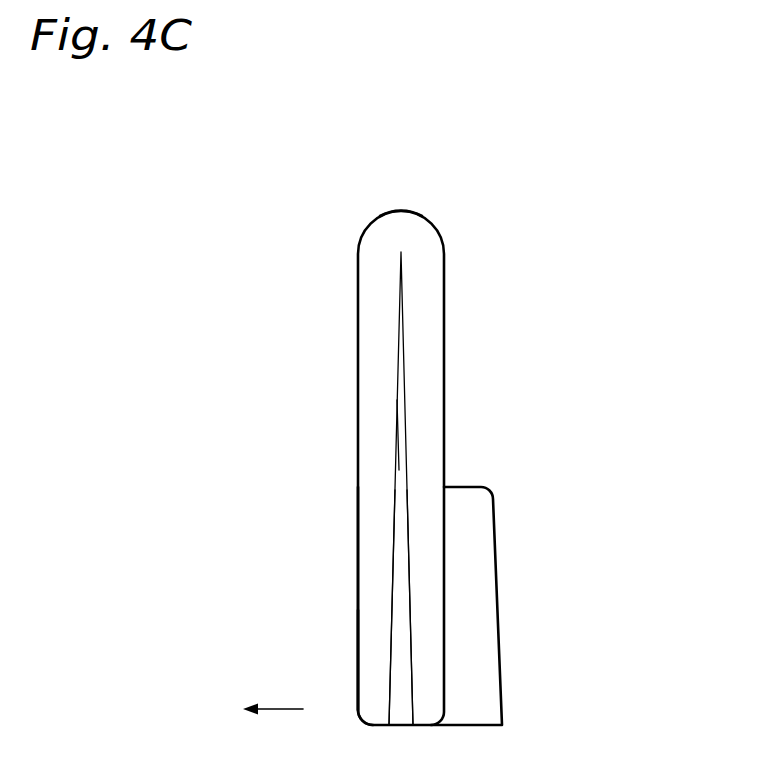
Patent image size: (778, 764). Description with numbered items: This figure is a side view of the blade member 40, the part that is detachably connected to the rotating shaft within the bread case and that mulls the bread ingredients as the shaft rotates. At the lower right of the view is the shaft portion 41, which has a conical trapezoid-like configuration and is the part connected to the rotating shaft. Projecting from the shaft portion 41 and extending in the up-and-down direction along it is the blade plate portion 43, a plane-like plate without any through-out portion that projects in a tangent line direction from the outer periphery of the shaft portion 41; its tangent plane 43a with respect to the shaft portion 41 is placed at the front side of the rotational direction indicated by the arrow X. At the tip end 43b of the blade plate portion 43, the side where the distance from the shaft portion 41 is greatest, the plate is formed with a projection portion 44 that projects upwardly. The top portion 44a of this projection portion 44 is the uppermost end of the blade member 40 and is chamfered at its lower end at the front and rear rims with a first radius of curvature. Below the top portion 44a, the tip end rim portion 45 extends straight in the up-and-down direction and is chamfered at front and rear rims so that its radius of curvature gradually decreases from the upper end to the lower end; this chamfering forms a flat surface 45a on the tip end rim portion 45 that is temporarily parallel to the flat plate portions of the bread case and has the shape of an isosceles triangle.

The blade member 40 is at (570, 302).
The shaft portion 41 is at (485, 601).
The blade plate portion 43 is at (362, 553).
The tangent plane 43a is at (358, 628).
The tip end 43b is at (402, 432).
The projection portion 44 is at (360, 292).
The top portion 44a is at (400, 210).
The tip end rim portion 45 is at (398, 381).
The flat surface 45a is at (398, 496).